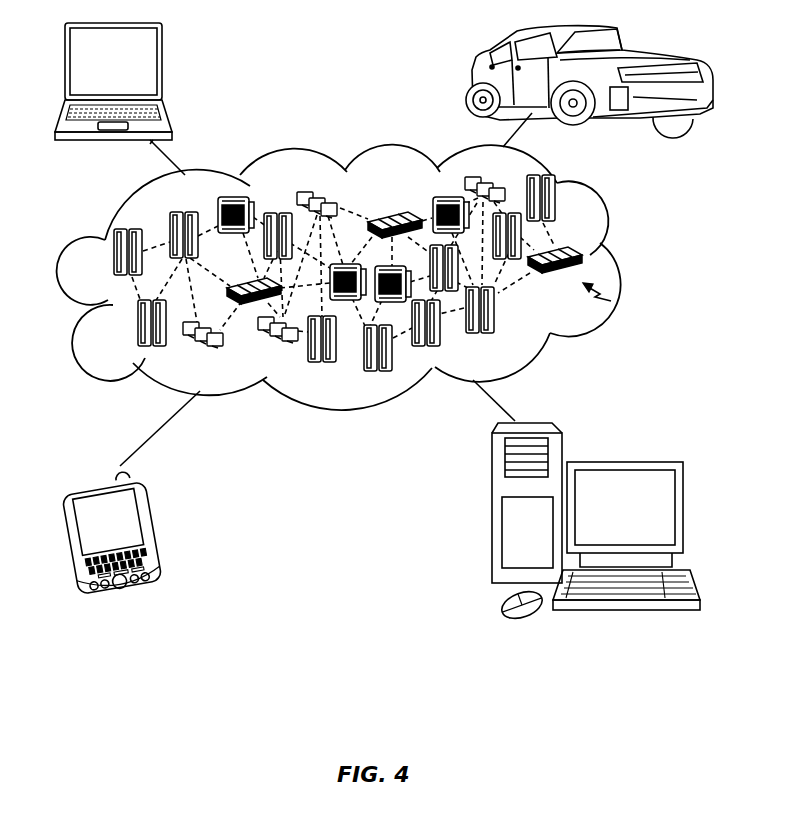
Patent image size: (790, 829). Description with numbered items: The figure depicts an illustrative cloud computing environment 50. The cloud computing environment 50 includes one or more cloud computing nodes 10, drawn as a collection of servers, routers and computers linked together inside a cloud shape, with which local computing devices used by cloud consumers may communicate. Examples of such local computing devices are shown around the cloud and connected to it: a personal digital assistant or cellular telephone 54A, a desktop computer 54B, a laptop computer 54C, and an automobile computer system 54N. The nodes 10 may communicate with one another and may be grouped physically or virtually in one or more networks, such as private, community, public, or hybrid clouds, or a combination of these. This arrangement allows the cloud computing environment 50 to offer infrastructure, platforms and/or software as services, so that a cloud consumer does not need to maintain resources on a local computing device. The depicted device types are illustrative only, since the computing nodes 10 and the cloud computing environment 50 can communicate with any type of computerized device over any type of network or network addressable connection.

The cloud computing nodes 10 is at (610, 300).
The cloud computing environment 50 is at (625, 262).
The personal digital assistant or cellular telephone 54A is at (156, 529).
The desktop computer 54B is at (625, 462).
The laptop computer 54C is at (161, 68).
The automobile computer system 54N is at (470, 78).